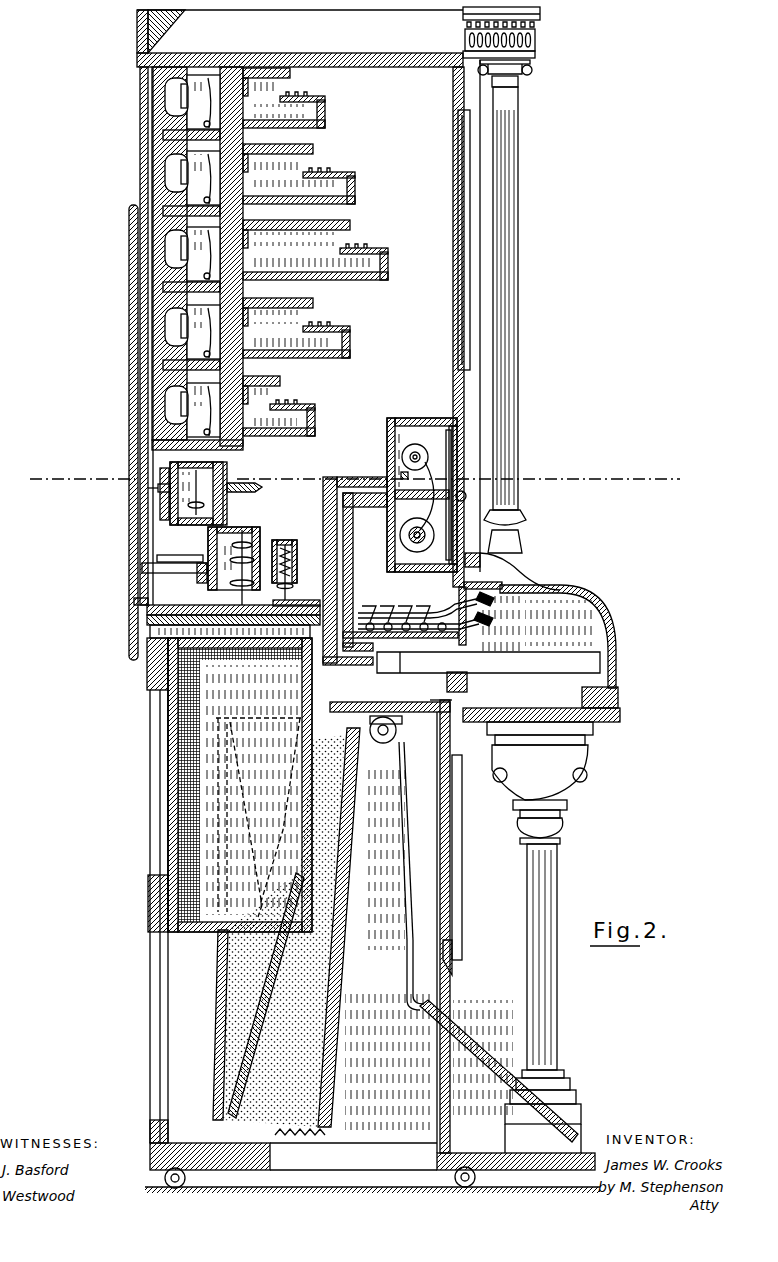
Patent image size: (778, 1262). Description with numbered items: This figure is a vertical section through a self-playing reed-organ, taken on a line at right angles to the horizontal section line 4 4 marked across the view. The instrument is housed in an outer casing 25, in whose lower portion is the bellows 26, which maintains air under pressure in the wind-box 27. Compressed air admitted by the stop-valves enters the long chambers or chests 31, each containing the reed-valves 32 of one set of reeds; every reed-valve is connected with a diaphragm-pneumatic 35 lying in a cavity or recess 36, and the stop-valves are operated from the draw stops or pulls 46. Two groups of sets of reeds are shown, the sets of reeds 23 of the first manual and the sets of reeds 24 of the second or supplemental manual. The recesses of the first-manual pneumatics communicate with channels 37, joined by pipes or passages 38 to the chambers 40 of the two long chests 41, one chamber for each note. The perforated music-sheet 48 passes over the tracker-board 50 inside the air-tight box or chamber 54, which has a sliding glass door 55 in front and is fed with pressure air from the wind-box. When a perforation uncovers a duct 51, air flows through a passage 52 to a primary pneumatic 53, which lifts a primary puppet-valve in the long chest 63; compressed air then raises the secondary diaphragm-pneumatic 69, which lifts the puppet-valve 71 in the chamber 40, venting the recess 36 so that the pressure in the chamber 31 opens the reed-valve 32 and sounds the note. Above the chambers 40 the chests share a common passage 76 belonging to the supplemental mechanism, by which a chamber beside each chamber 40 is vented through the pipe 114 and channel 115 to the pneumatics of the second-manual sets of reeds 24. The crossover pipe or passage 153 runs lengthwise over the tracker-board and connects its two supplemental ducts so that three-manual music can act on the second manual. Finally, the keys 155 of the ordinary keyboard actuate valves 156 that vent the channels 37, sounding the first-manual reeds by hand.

The section line 4 4 is at (353, 478).
The sets of reeds of the first manual 23 is at (330, 250).
The sets of reeds of the second manual 24 is at (263, 93).
The outer casing 25 is at (132, 773).
The bellows 26 is at (340, 933).
The wind-box 27 is at (240, 785).
The chambers or chests 31 is at (203, 256).
The reed-valves 32 is at (222, 66).
The diaphragm-pneumatic 35 is at (166, 82).
The cavity or recess 36 is at (166, 112).
The channels 37 is at (152, 297).
The pipes or passages 38 is at (158, 488).
The chambers 40 is at (218, 537).
The long chests 41 is at (223, 502).
The draw stops or pulls 46 is at (490, 602).
The perforated music-sheet 48 is at (460, 483).
The tracker-board 50 is at (405, 488).
The ducts or passages 51 is at (398, 527).
The pipes or passages 52 is at (334, 515).
The primary or controlling pneumatics 53 is at (287, 603).
The air-tight box or chamber 54 is at (398, 432).
The sliding glass door 55 is at (460, 508).
The long chest 63 is at (290, 545).
The secondary diaphragm-pneumatic 69 is at (150, 631).
The puppet-valve 71 is at (258, 488).
The passage 76 is at (227, 467).
The pipe 114 is at (142, 573).
The channel 115 is at (130, 507).
The crossover pipe or passage 153 is at (413, 479).
The keys 155 is at (615, 648).
The valves 156 is at (370, 655).